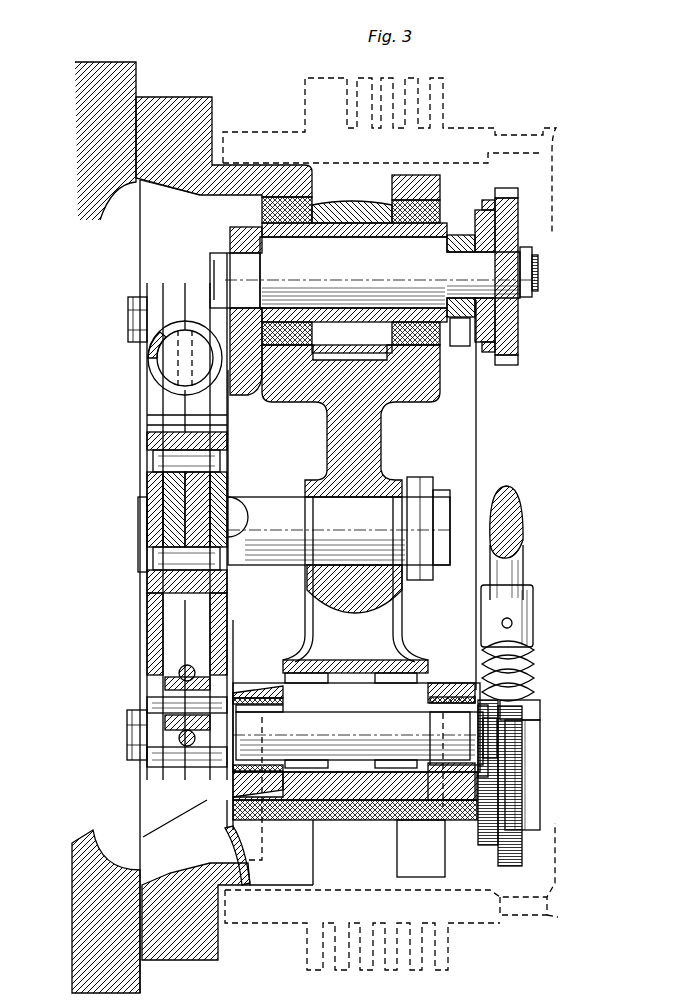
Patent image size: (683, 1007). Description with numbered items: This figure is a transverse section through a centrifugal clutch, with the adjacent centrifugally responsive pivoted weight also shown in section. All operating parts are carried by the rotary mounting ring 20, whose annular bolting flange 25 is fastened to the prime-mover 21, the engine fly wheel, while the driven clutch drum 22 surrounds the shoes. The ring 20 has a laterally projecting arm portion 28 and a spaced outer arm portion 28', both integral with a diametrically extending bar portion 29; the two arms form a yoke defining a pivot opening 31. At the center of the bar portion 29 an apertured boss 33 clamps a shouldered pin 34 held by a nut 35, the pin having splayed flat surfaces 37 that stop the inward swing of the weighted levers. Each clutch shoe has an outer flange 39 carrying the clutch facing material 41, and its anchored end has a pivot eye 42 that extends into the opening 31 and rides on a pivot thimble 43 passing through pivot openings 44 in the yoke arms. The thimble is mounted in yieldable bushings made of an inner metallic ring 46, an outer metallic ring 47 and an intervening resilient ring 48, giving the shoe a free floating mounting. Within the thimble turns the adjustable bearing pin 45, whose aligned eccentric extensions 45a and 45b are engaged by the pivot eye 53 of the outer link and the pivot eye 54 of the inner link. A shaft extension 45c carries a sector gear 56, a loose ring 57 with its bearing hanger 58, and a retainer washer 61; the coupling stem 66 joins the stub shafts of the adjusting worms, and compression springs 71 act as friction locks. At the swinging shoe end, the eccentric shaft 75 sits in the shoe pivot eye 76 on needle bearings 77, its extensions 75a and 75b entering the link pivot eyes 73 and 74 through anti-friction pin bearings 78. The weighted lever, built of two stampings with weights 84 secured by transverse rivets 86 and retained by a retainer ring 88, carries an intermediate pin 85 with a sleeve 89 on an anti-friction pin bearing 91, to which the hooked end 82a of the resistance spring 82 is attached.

The rotary mounting ring 20 is at (217, 92).
The prime-mover 21 is at (100, 85).
The clutch drum 22 is at (270, 130).
The annular bolting flange 25 is at (172, 95).
The arm portion 28 is at (247, 524).
The arm portion 28' is at (410, 169).
The bar portion 29 is at (322, 434).
The pivot opening 31 is at (322, 147).
The apertured boss 33 is at (320, 580).
The shouldered pin 34 is at (270, 487).
The nut 35 is at (420, 478).
The splayed flat surfaces 37 is at (240, 516).
The outer flange 39 is at (452, 822).
The clutch facing material 41 is at (330, 820).
The pivot eye 42 is at (355, 205).
The pivot thimble 43 is at (328, 240).
The pivot openings 44 is at (290, 198).
The adjustable bearing pin 45 is at (380, 272).
The reduced extension 45a is at (500, 285).
The extension 45b is at (243, 272).
The shaft extension 45c is at (498, 262).
The inner metallic ring 46 is at (240, 234).
The outer metallic ring 47 is at (258, 205).
The resilient ring 48 is at (262, 220).
The pivot eye 53 is at (462, 322).
The pivot eye 54 is at (250, 378).
The sector gear 56 is at (510, 333).
The ring 57 is at (525, 310).
The bearing hanger 58 is at (490, 198).
The retainer washer 61 is at (535, 290).
The coupling stem 66 is at (520, 520).
The compression springs 71 is at (535, 663).
The pivot eye 73 is at (450, 683).
The pivot eye 74 is at (243, 688).
The eccentric shaft 75 is at (356, 727).
The eccentric extension 75a is at (463, 741).
The eccentric extension 75b is at (270, 733).
The pivot eye 76 is at (355, 660).
The needle bearings 77 is at (312, 685).
The anti-friction pin bearings 78 is at (268, 697).
The resistance spring 82 is at (150, 380).
The hooked end 82a is at (185, 746).
The weights 84 is at (160, 585).
The intermediate pin 85 is at (165, 700).
The transverse rivets 86 is at (170, 460).
The retainer ring 88 is at (140, 765).
The sleeve 89 is at (205, 768).
The anti-friction pin bearing 91 is at (165, 683).